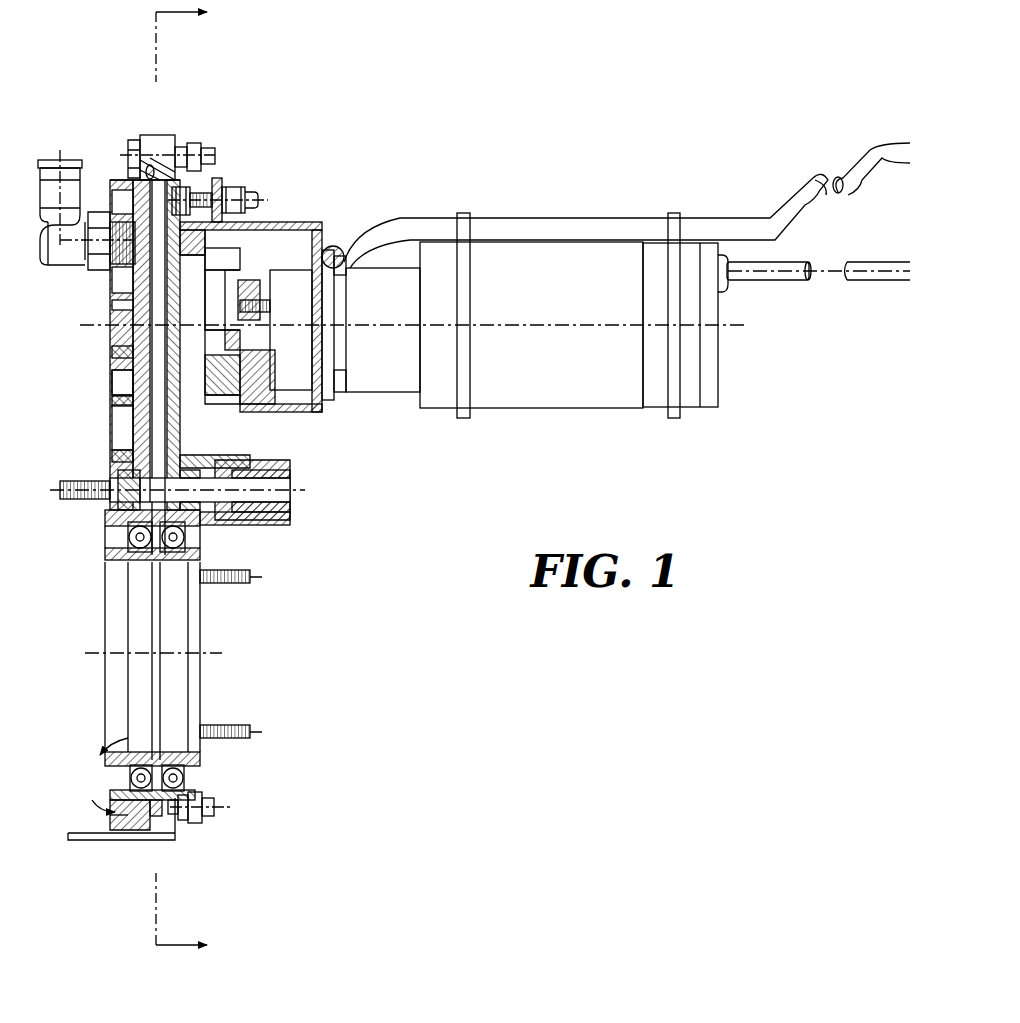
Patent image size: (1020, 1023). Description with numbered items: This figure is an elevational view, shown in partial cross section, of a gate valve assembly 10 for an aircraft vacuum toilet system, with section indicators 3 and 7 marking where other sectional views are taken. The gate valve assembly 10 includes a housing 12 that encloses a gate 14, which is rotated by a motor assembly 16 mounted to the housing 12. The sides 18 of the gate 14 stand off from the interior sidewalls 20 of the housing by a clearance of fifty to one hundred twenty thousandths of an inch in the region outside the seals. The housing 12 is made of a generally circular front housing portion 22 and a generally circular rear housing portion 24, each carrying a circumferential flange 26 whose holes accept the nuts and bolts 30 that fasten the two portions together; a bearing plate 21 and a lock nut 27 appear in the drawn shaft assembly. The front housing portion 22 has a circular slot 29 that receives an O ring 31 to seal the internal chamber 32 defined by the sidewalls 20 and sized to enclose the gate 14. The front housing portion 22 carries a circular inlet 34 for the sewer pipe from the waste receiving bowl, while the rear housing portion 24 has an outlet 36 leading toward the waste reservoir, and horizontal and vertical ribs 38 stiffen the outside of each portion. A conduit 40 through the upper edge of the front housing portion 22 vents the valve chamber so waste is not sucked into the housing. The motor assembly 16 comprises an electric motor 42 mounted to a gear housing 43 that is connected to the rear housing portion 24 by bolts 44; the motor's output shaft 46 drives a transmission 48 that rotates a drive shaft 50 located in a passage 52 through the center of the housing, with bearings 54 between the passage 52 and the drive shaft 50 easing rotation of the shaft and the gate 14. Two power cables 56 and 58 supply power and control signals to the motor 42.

The section line 3- 3 is at (196, 479).
The section line 7- 7 is at (100, 775).
The gate valve assembly 10 is at (345, 572).
The housing 12 is at (170, 135).
The gate 14 is at (150, 328).
The motor assembly 16 is at (290, 412).
The sides of the gate 18 is at (215, 310).
The interior sidewall 20 is at (133, 283).
The bearing plate 21 is at (110, 530).
The front housing portion 22 is at (112, 385).
The rear housing portion 24 is at (205, 540).
The circumferential flange 26 is at (175, 830).
The lock nut 27 is at (172, 143).
The circular slot 29 is at (150, 172).
The nuts and bolts 30 is at (135, 142).
The O ring 31 is at (218, 178).
The internal chamber 32 is at (245, 198).
The circular inlet 34 is at (115, 712).
The outlet 36 is at (185, 697).
The ribs 38 is at (115, 352).
The conduit 40 is at (55, 160).
The electric motor 42 is at (550, 410).
The gear housing 43 is at (338, 247).
The bolts 44 is at (258, 200).
The output shaft 46 is at (248, 312).
The transmission 48 is at (278, 405).
The drive shaft 50 is at (290, 488).
The passage 52 is at (120, 482).
The bearings 54 is at (192, 470).
The power cable 56 is at (570, 216).
The power cable 58 is at (795, 262).